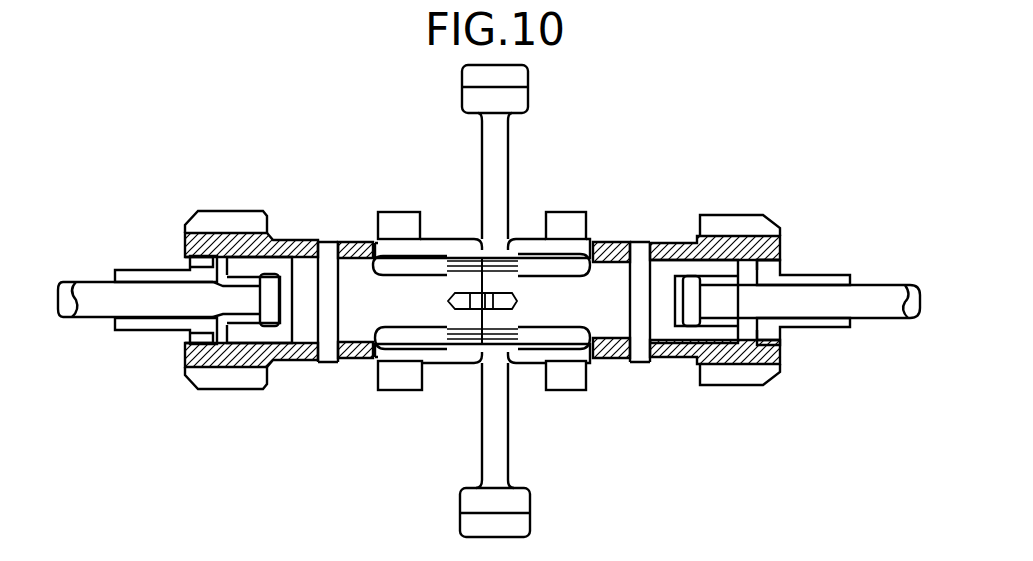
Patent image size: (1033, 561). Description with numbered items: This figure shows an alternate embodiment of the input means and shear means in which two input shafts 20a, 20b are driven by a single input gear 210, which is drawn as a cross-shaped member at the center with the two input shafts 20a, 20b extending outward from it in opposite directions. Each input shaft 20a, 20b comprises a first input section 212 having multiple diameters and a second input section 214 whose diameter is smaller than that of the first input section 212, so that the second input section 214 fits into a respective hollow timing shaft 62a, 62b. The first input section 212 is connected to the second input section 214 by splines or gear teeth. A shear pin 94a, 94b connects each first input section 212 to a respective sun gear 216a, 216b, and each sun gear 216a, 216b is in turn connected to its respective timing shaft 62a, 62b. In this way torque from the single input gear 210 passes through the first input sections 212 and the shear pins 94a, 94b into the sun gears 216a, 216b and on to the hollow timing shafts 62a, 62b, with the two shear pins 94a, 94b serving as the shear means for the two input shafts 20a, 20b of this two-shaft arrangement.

The input gear 210 is at (505, 147).
The first input section 212 is at (413, 283).
The shear pin 94a is at (326, 242).
The shear pin 94b is at (645, 243).
The sun gear 216a is at (227, 210).
The sun gear 216b is at (750, 213).
The hollow timing shaft 62a is at (149, 270).
The hollow timing shaft 62b is at (827, 275).
The input shaft 20a is at (80, 292).
The input shaft 20b is at (892, 313).
The second input section 214 is at (97, 281).